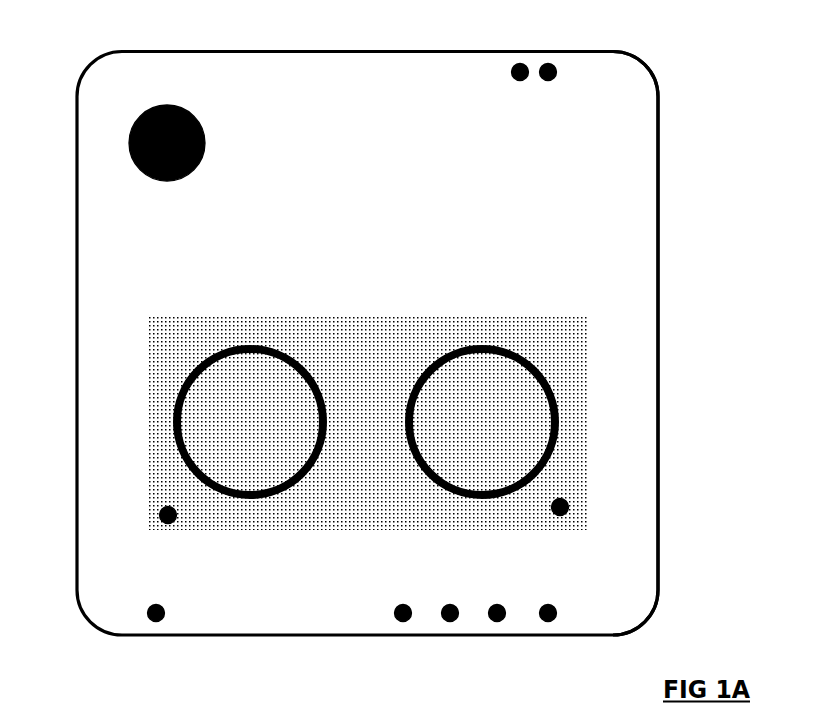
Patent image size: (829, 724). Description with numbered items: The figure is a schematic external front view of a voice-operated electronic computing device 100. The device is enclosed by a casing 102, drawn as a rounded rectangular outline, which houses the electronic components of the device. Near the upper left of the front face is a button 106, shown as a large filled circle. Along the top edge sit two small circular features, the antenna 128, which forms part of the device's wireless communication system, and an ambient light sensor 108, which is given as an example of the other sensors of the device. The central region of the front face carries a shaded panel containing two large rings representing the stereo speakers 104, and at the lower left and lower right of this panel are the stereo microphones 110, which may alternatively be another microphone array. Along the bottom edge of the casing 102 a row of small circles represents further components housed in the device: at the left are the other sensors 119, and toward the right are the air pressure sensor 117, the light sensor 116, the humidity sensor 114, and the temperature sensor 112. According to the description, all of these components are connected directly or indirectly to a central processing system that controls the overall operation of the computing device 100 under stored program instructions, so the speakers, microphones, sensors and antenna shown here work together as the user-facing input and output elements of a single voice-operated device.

The electronic computing device 100 is at (267, 48).
The casing 102 is at (660, 157).
The stereo speakers 104 is at (175, 447).
The button 106 is at (165, 107).
The ambient light sensor 108 is at (547, 62).
The stereo microphones 110 is at (160, 515).
The temperature sensor 112 is at (545, 620).
The humidity sensor 114 is at (497, 620).
The light sensor 116 is at (448, 620).
The air pressure sensor 117 is at (403, 618).
The other sensors 119 is at (153, 618).
The antenna 128 is at (515, 65).